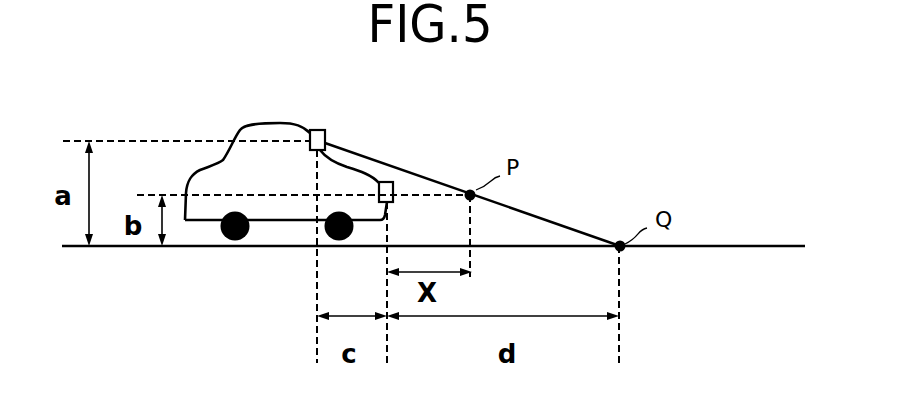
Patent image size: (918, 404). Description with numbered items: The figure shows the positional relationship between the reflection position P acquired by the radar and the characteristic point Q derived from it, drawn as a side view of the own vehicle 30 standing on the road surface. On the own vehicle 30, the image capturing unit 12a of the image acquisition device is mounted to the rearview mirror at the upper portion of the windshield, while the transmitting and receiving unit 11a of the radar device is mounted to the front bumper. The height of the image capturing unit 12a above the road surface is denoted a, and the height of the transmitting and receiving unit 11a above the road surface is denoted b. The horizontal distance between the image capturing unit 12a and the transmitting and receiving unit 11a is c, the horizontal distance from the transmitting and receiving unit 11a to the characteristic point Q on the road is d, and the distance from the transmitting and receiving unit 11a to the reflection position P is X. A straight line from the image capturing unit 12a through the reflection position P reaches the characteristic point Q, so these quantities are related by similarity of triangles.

The own vehicle 30 is at (240, 125).
The image capturing unit 12a is at (317, 130).
The transmitting and receiving unit 11a is at (393, 187).